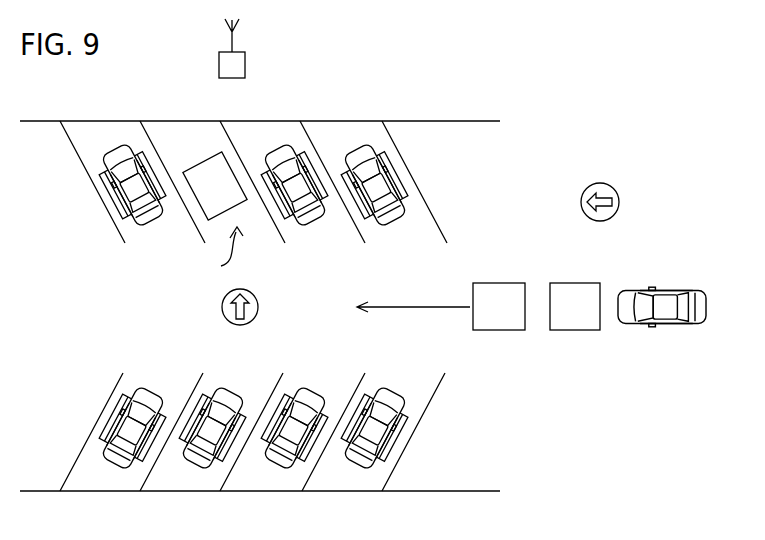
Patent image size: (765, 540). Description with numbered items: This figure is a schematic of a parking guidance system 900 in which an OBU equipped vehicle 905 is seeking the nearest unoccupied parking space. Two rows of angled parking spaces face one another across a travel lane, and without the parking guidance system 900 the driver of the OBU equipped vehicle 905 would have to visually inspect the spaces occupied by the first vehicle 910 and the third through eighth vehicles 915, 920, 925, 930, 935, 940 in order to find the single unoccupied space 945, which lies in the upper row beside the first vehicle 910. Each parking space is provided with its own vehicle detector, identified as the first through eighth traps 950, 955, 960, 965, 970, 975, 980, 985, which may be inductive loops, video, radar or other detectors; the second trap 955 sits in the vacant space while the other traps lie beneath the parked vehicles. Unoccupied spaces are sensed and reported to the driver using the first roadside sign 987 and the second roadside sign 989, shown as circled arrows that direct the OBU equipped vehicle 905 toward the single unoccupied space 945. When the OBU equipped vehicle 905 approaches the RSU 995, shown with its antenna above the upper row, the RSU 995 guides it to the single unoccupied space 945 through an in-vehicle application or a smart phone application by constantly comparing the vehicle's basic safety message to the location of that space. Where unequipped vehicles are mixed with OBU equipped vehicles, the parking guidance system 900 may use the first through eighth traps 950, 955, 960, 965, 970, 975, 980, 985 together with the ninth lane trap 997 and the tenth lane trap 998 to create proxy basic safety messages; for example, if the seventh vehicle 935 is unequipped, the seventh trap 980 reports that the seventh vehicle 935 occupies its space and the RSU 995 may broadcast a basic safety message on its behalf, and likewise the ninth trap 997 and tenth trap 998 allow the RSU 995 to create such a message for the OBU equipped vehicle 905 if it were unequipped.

The parking guidance system 900 is at (573, 101).
The OBU equipped vehicle V2 905 is at (665, 324).
The vehicle V1 910 is at (140, 198).
The vehicle V3 915 is at (300, 198).
The vehicle V4 920 is at (382, 198).
The vehicle V5 925 is at (135, 414).
The vehicle V6 930 is at (200, 455).
The vehicle V7 935 is at (302, 412).
The vehicle V8 940 is at (383, 413).
The single unoccupied space 945 is at (213, 254).
The trap M1 950 is at (110, 198).
The trap M2 955 is at (206, 163).
The trap M3 960 is at (315, 150).
The trap M4 965 is at (398, 174).
The trap M5 970 is at (112, 417).
The trap M6 975 is at (236, 458).
The trap M7 980 is at (314, 453).
The trap M8 985 is at (398, 437).
The roadside sign DS1 987 is at (618, 190).
The roadside sign DS2 989 is at (222, 307).
The RSU 995 is at (248, 64).
The trap M9 997 is at (501, 330).
The trap M10 998 is at (576, 330).